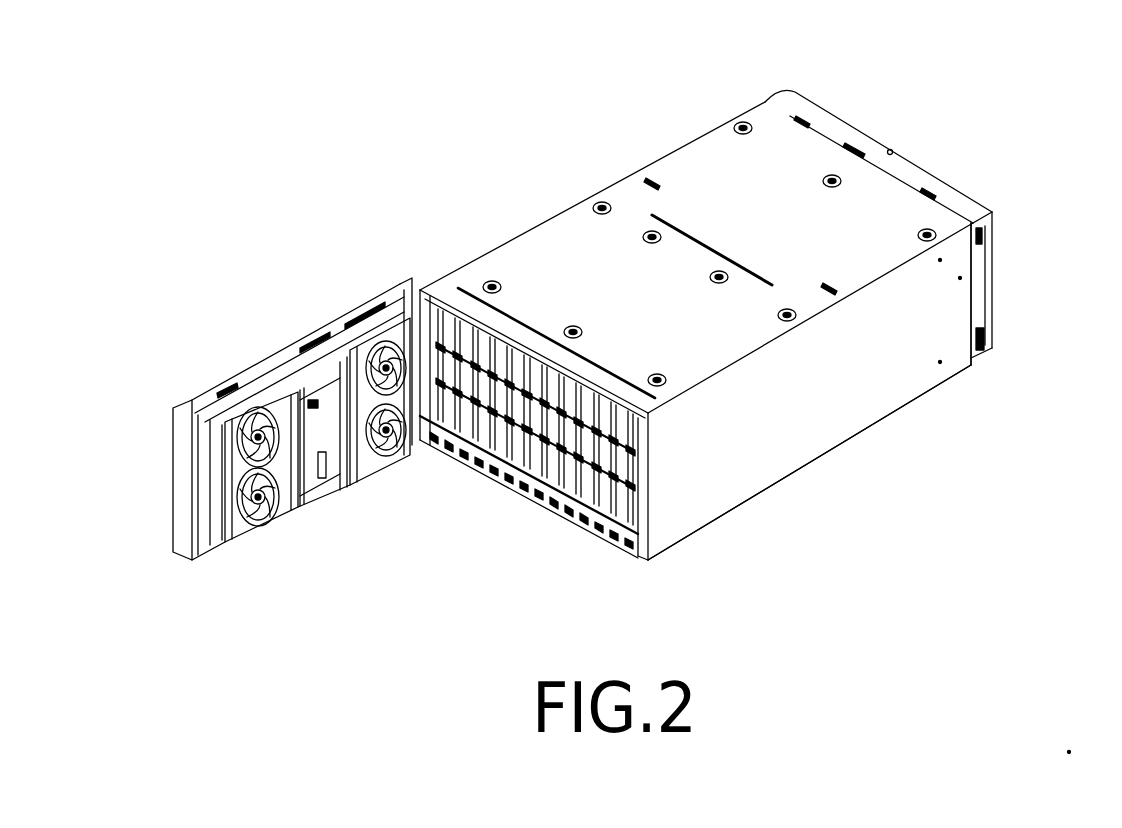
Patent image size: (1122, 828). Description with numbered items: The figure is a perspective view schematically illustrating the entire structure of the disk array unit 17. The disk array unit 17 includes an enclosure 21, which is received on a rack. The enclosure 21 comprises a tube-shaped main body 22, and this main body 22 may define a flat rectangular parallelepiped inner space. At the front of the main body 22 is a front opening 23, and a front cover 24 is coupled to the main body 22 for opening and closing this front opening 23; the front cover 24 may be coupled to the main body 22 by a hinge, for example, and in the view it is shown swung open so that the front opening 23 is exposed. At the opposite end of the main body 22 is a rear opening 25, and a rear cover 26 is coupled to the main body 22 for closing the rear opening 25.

The disk array unit 17 is at (1013, 200).
The enclosure 21 is at (553, 217).
The main body 22 is at (910, 403).
The front opening 23 is at (622, 552).
The front cover 24 is at (290, 338).
The rear opening 25 is at (790, 112).
The rear cover 26 is at (990, 282).